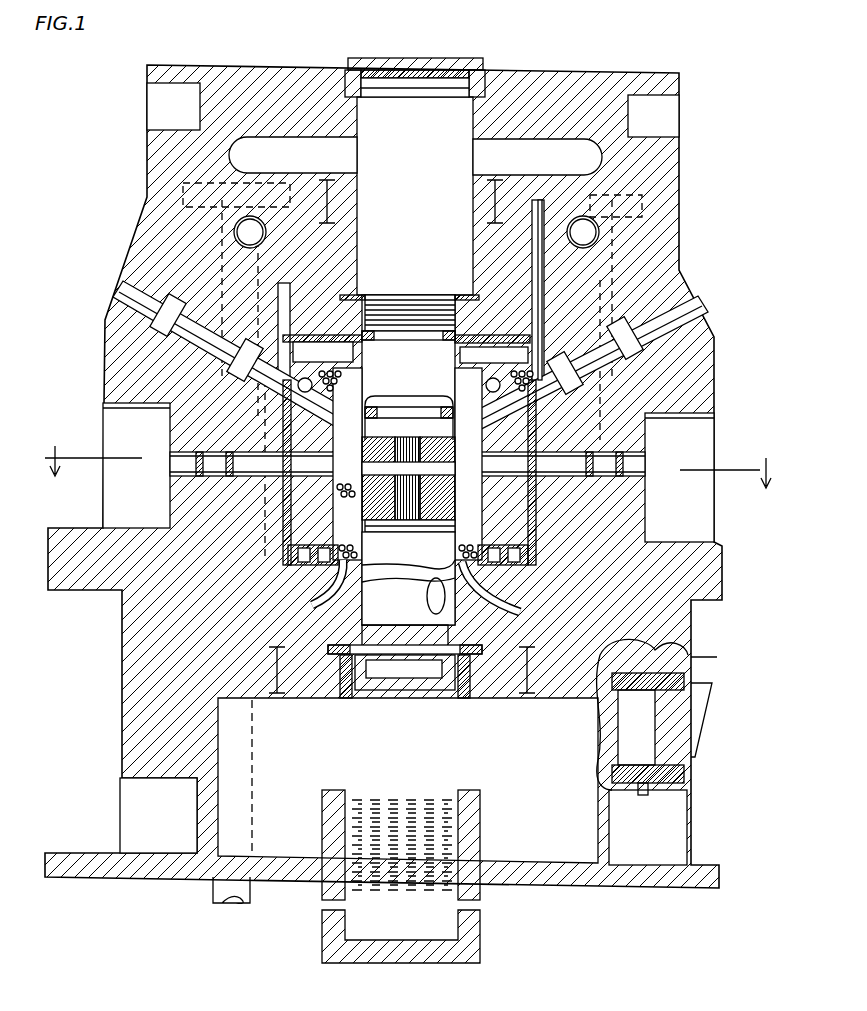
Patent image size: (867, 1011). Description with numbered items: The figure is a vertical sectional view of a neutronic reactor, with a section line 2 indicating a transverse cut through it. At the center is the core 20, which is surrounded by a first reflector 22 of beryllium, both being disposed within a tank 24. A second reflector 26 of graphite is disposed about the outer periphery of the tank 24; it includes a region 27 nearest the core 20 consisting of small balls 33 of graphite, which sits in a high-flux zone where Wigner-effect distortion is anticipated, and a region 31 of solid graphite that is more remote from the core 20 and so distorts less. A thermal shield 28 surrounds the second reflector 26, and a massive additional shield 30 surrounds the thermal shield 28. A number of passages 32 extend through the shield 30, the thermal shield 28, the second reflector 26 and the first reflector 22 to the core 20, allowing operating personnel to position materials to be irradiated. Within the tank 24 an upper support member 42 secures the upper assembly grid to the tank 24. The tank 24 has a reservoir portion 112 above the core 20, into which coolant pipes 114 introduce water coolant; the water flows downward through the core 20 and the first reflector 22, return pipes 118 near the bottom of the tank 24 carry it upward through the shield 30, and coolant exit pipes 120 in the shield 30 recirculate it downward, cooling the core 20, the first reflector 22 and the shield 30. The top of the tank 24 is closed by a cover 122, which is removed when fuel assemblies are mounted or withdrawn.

The section line 2- 2 is at (402, 467).
The core 20 is at (408, 503).
The first reflector 22 is at (378, 458).
The tank 24 is at (370, 396).
The second reflector 26 is at (476, 356).
The region 27 is at (352, 510).
The thermal shield 28 is at (552, 340).
The shield 30 is at (680, 282).
The region 31 is at (492, 542).
The passages 32 is at (118, 298).
The balls 33 is at (322, 363).
The upper support member 42 is at (418, 436).
The reservoir portion 112 is at (432, 232).
The coolant pipes 114 is at (290, 146).
The return pipes 118 is at (232, 237).
The coolant exit pipes 120 is at (218, 392).
The cover 122 is at (456, 62).